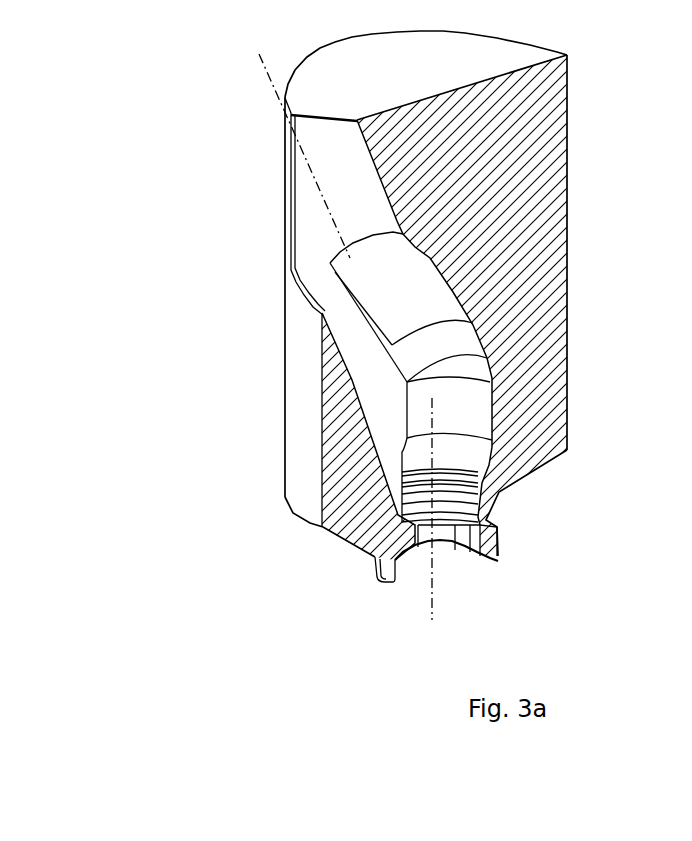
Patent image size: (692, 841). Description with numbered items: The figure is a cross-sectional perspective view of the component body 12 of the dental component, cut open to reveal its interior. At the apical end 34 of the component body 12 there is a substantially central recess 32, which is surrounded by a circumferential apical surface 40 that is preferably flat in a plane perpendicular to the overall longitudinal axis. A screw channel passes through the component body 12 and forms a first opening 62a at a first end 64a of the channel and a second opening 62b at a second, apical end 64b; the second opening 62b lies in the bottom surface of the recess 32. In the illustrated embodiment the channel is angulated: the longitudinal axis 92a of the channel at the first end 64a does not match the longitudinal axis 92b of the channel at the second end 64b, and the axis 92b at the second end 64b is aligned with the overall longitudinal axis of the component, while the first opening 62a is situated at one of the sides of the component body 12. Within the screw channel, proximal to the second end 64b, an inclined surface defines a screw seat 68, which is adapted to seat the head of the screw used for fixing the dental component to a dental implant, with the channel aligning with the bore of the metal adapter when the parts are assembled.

The component body 12 is at (346, 305).
The central recess 32 is at (468, 585).
The apical end 34 is at (540, 557).
The circumferential apical surface 40 is at (349, 586).
The screw seat 68 is at (516, 495).
The longitudinal axis of the screw channel at the first end 92a is at (248, 156).
The longitudinal axis of the screw channel at the second end 92b is at (368, 525).
The first opening 62a is at (292, 319).
The first end 64a is at (292, 319).
The second opening 62b is at (542, 533).
The second end 64b is at (542, 533).